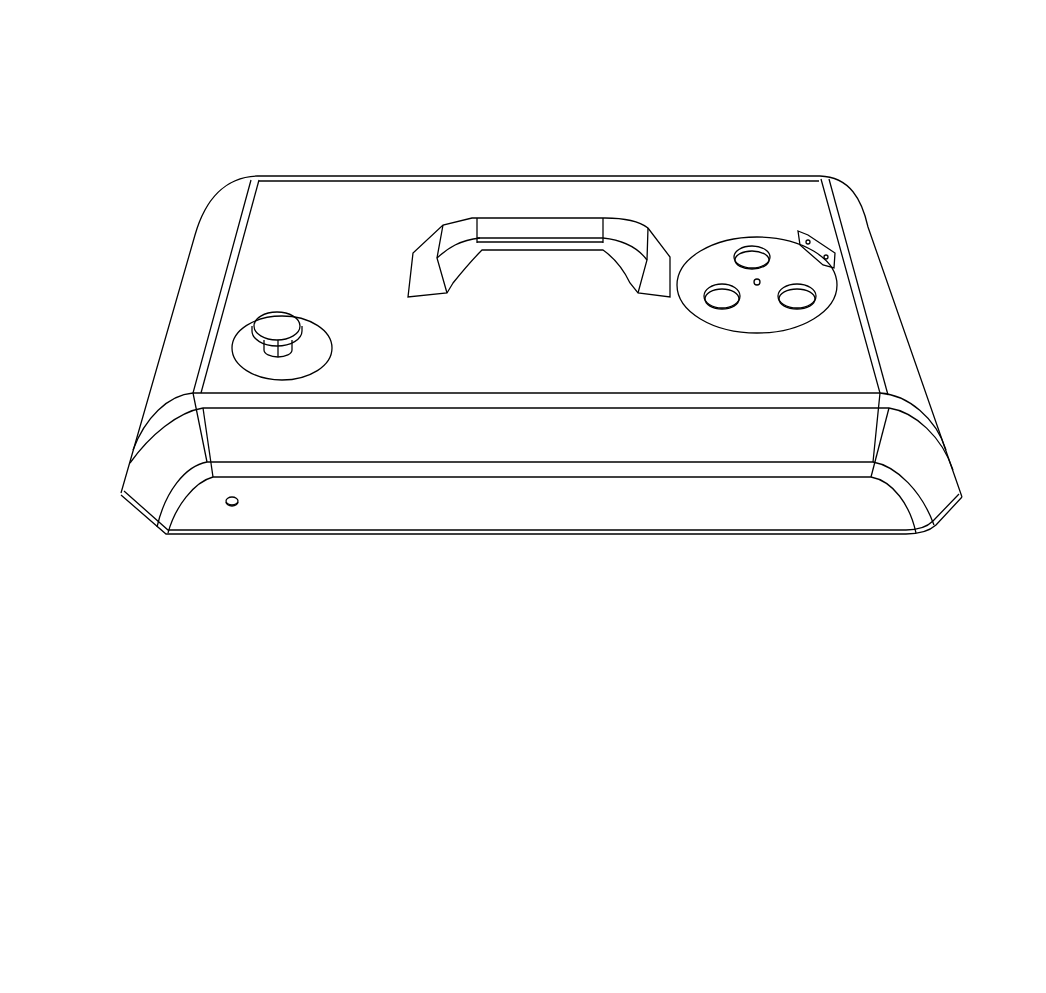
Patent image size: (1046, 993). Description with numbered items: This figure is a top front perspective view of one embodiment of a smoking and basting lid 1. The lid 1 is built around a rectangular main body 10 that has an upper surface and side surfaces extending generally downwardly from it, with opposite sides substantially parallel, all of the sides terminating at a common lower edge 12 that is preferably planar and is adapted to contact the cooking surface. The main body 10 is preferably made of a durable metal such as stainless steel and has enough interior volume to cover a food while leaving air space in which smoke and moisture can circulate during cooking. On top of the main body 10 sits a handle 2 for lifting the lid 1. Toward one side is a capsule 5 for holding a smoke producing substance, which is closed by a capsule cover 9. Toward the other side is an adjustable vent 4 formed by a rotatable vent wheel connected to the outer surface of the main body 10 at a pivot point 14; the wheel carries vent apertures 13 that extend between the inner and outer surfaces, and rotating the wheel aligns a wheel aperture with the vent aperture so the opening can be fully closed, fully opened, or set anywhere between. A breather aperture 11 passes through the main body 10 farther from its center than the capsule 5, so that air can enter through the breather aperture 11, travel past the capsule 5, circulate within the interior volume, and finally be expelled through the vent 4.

The smoking and basting lid 1 is at (283, 258).
The main body 10 is at (371, 167).
The handle 2 is at (454, 220).
The adjustable vent 4 is at (711, 253).
The vent apertures 13 is at (755, 258).
The pivot point 14 is at (757, 290).
The capsule 5 is at (336, 352).
The capsule cover 9 is at (248, 346).
The breather aperture 11 is at (134, 454).
The lower edge 12 is at (497, 538).